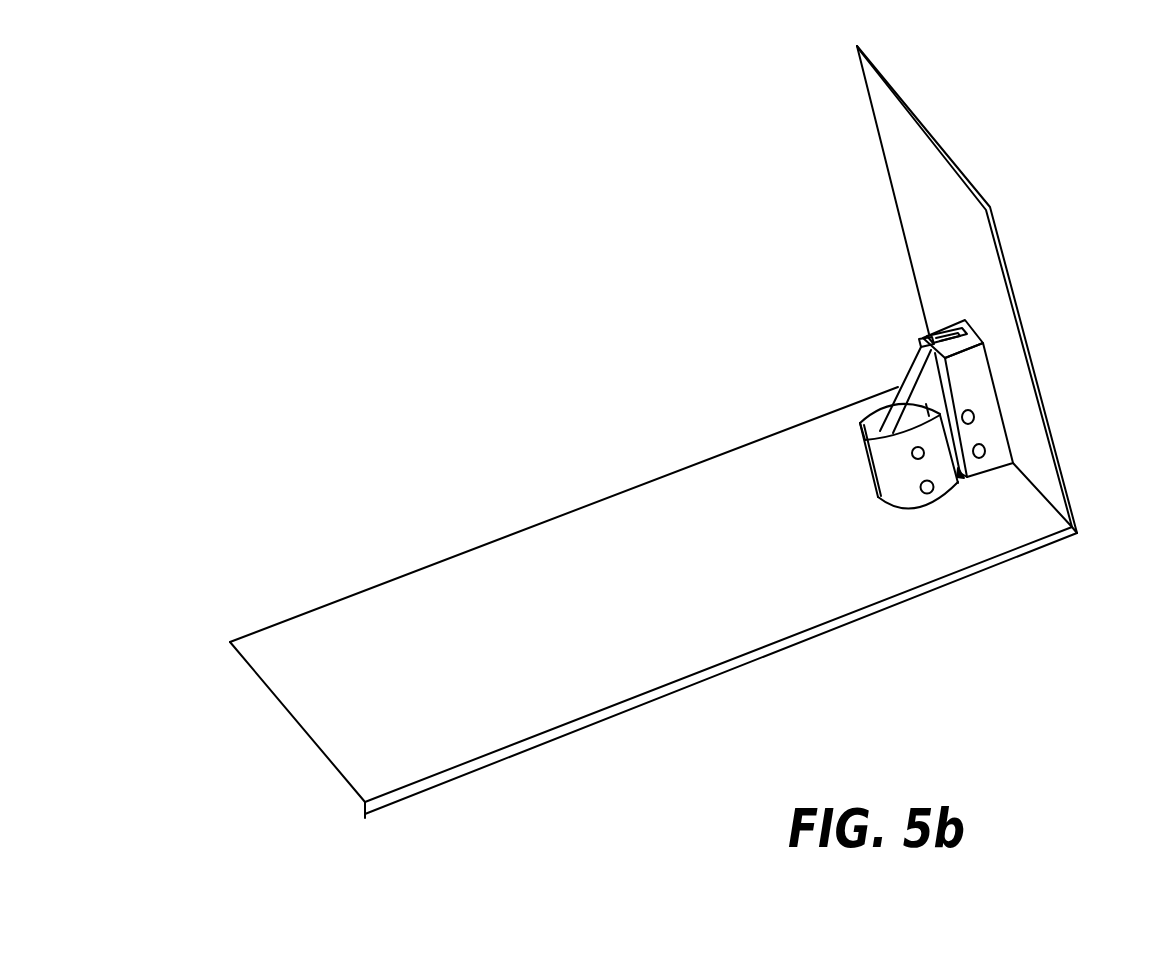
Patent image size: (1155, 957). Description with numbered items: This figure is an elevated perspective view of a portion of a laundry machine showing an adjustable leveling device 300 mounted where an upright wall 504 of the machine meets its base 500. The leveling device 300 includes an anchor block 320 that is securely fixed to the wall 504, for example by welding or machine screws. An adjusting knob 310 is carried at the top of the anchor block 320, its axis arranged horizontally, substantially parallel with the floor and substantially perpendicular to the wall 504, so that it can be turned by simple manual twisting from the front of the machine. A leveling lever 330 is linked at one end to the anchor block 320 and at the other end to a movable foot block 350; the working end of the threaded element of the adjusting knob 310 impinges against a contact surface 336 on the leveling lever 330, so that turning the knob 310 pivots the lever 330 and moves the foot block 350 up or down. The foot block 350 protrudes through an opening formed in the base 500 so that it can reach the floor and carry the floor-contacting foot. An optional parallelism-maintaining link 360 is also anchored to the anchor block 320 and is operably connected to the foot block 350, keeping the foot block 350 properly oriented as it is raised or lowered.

The adjustable leveling device 300 is at (679, 288).
The adjusting knob 310 is at (940, 327).
The anchor block 320 is at (975, 374).
The leveling lever 330 is at (927, 404).
The contact surface 336 is at (922, 342).
The foot block 350 is at (862, 480).
The parallelism-maintaining link 360 is at (958, 477).
The base 500 is at (427, 748).
The wall 504 is at (918, 212).